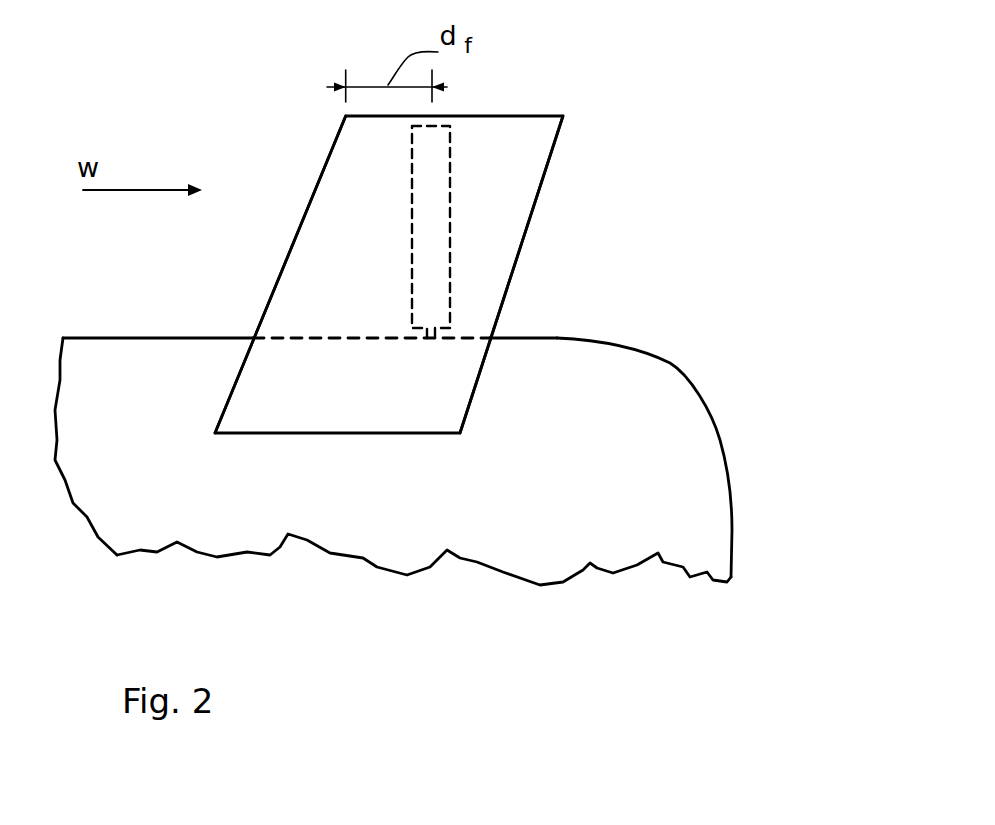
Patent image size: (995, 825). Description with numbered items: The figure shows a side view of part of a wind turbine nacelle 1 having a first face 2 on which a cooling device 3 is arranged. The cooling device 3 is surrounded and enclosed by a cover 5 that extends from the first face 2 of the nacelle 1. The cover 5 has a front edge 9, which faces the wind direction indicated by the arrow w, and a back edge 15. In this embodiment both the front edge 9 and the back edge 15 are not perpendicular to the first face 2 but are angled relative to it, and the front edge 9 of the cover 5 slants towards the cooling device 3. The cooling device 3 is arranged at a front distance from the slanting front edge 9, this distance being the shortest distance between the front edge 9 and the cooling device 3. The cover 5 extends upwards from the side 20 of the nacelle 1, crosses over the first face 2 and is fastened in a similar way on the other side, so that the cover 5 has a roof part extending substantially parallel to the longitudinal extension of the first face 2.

The wind turbine nacelle 1 is at (655, 383).
The first face 2 is at (109, 326).
The cooling device 3 is at (438, 223).
The cover 5 is at (487, 293).
The front edge 9 is at (320, 170).
The back edge 15 is at (557, 138).
The side 20 is at (500, 502).